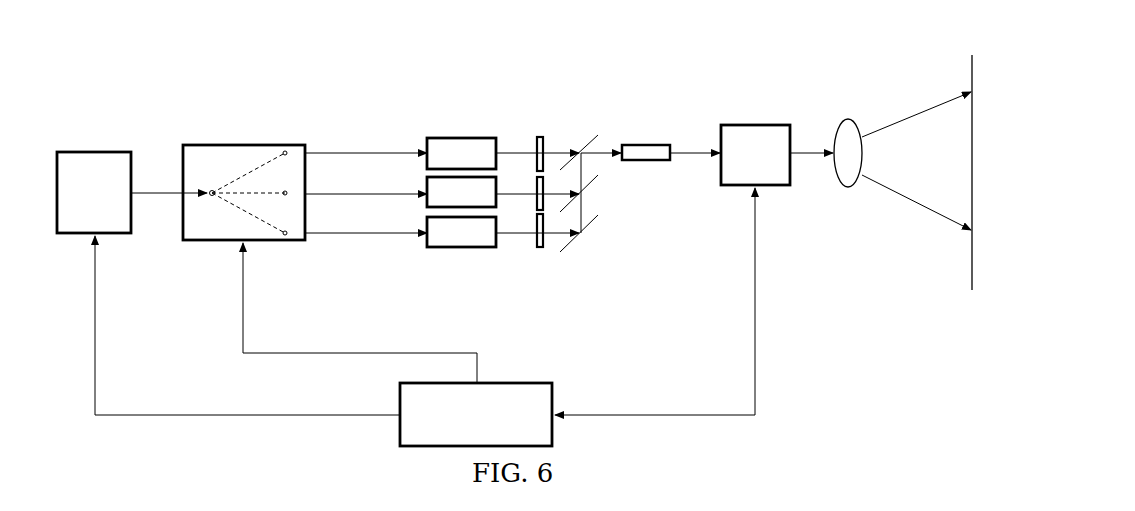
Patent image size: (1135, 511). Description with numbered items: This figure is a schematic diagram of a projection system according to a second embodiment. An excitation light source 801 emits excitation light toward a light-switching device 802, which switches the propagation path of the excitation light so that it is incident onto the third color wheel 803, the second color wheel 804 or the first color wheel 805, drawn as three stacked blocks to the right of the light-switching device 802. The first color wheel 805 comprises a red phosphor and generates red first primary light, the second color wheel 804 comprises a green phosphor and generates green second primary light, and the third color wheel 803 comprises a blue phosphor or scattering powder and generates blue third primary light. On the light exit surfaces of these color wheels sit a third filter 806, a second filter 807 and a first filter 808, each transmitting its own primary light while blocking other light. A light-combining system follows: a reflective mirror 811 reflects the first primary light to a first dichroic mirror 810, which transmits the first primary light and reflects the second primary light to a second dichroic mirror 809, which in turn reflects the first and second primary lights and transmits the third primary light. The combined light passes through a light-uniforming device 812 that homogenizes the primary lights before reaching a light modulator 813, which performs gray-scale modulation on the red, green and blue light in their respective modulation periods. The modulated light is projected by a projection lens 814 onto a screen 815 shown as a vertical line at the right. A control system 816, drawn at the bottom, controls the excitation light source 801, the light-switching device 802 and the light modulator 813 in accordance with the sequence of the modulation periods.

The excitation light source 801 is at (78, 162).
The light-switching device 802 is at (227, 160).
The third color wheel 803 is at (453, 150).
The second color wheel 804 is at (428, 183).
The first color wheel 805 is at (470, 240).
The third filter 806 is at (538, 135).
The second filter 807 is at (533, 200).
The first filter 808 is at (537, 244).
The second dichroic mirror 809 is at (593, 137).
The first dichroic mirror 810 is at (597, 177).
The reflective mirror 811 is at (597, 217).
The light-uniforming device 812 is at (658, 150).
The light modulator 813 is at (755, 130).
The projection lens 814 is at (848, 135).
The screen 815 is at (972, 267).
The control system 816 is at (552, 390).